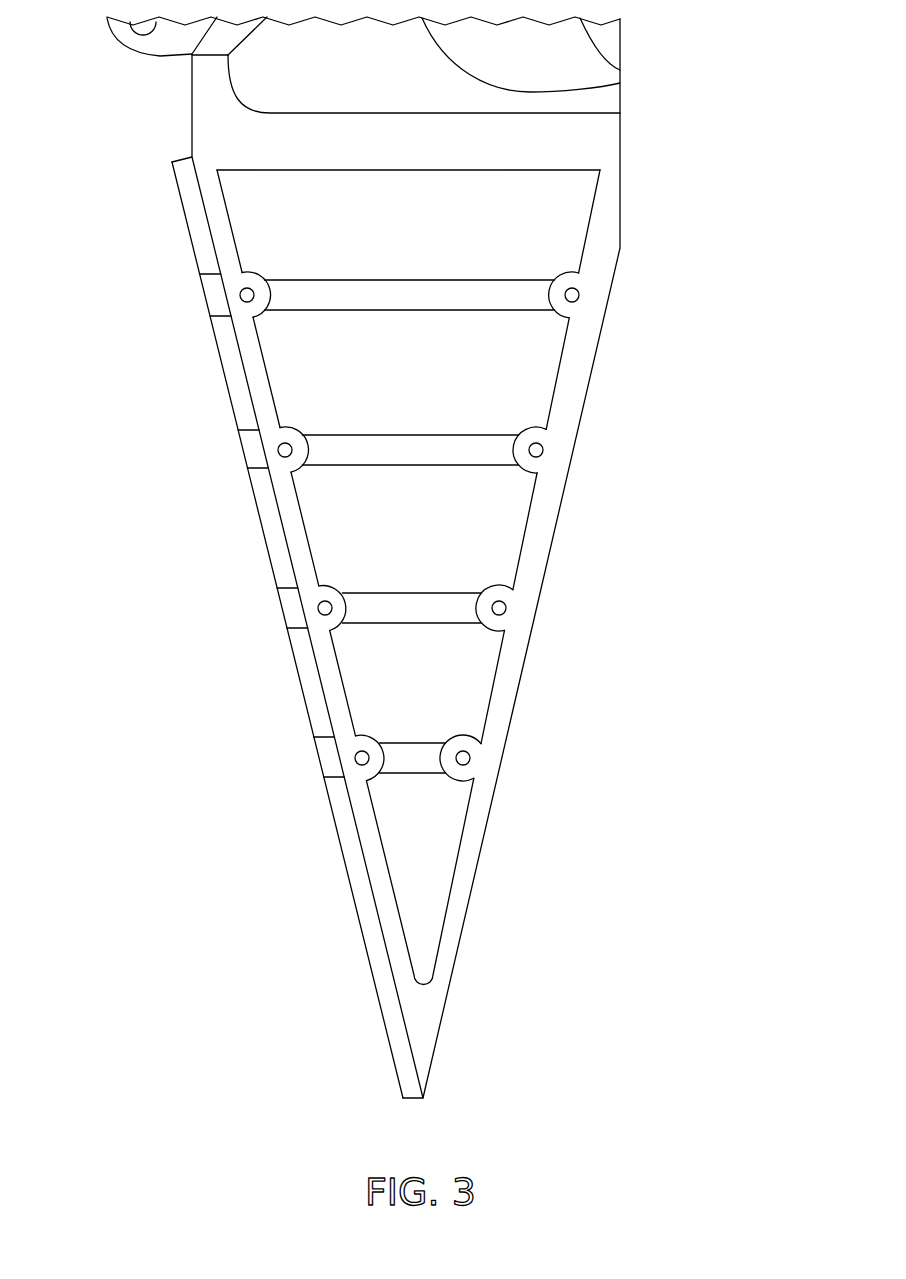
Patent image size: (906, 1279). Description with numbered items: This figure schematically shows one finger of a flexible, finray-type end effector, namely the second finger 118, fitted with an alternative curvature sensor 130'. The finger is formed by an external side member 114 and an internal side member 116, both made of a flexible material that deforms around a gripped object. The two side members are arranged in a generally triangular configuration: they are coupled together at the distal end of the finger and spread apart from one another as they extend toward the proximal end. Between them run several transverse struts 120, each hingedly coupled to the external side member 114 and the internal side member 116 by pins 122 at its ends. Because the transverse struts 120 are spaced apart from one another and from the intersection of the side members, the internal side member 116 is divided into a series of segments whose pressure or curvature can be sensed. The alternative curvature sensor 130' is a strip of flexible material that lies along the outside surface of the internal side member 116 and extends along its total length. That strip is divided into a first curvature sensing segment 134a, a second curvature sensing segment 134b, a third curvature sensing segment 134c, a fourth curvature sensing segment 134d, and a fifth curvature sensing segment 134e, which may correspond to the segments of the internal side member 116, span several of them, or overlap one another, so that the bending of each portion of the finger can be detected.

The external side member 114 is at (566, 506).
The internal side member 116 is at (202, 199).
The second finger 118 is at (717, 170).
The transverse strut 120 is at (398, 310).
The pin 122 is at (579, 295).
The alternative curvature sensor 130' is at (95, 728).
The first curvature sensing segment 134a is at (192, 258).
The second curvature sensing segment 134b is at (220, 370).
The third curvature sensing segment 134c is at (258, 530).
The fourth curvature sensing segment 134d is at (296, 683).
The fifth curvature sensing segment 134e is at (344, 874).